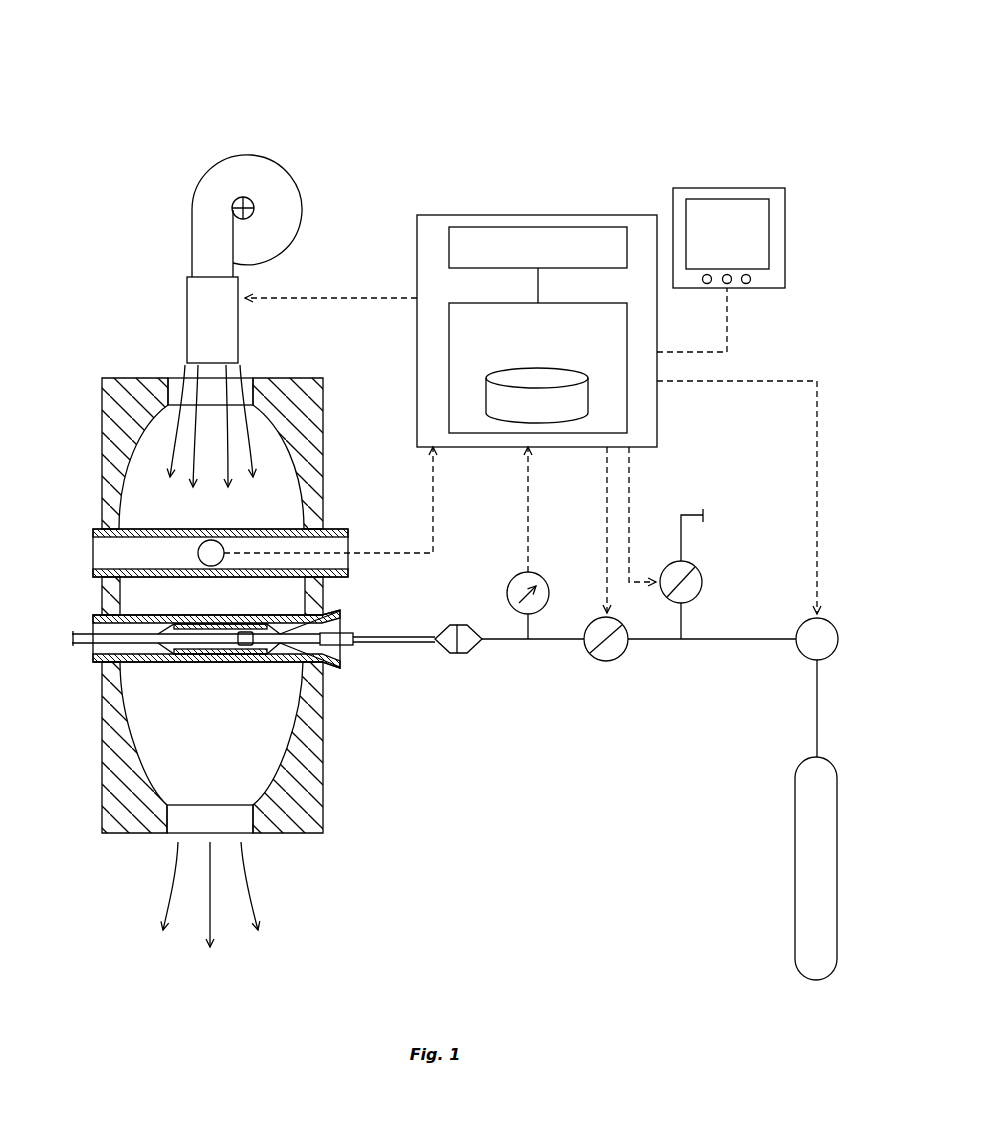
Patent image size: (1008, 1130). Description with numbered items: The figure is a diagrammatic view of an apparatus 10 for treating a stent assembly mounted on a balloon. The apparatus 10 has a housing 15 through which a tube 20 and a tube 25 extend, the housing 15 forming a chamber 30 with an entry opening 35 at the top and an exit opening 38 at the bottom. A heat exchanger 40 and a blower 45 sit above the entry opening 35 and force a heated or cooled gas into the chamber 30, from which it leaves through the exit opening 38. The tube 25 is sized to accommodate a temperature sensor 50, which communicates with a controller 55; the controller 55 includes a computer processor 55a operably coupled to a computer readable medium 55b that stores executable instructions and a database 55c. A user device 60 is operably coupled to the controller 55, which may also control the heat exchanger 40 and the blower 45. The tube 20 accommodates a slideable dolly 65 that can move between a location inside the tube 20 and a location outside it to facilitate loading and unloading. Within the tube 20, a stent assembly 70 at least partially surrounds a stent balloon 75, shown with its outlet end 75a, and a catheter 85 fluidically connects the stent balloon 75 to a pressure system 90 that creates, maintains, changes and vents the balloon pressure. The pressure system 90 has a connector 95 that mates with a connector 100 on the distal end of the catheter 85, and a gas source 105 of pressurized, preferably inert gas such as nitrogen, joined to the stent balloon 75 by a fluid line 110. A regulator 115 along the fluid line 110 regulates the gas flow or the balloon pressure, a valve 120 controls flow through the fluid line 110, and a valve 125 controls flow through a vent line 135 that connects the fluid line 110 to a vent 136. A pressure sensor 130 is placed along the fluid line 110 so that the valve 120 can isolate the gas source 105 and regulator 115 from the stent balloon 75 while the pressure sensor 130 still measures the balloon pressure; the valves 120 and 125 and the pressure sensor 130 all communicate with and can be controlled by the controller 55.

The apparatus 10 is at (612, 95).
The housing 15 is at (240, 605).
The tube 20 is at (93, 660).
The tube 25 is at (93, 572).
The chamber 30 is at (200, 727).
The entry opening 35 is at (243, 392).
The exit opening 38 is at (247, 823).
The heat exchanger 40 is at (187, 311).
The blower 45 is at (299, 191).
The temperature sensor 50 is at (198, 552).
The controller 55 is at (486, 292).
The computer processor 55a is at (449, 253).
The computer readable medium 55b is at (449, 331).
The database 55c is at (486, 398).
The user device 60 is at (785, 243).
The dolly 65 is at (347, 646).
The stent assembly 70 is at (162, 630).
The stent balloon 75 is at (280, 620).
The diffuser inlet 75a is at (282, 631).
The catheter 85 is at (396, 636).
The pressure system 90 is at (629, 680).
The connector 95 is at (477, 656).
The connector 100 is at (448, 656).
The gas source 105 is at (837, 843).
The fluid line 110 is at (817, 703).
The regulator 115 is at (838, 637).
The valve 120 is at (627, 648).
The valve 125 is at (702, 593).
The pressure sensor 130 is at (510, 580).
The vent line 135 is at (680, 542).
The vent 136 is at (705, 510).